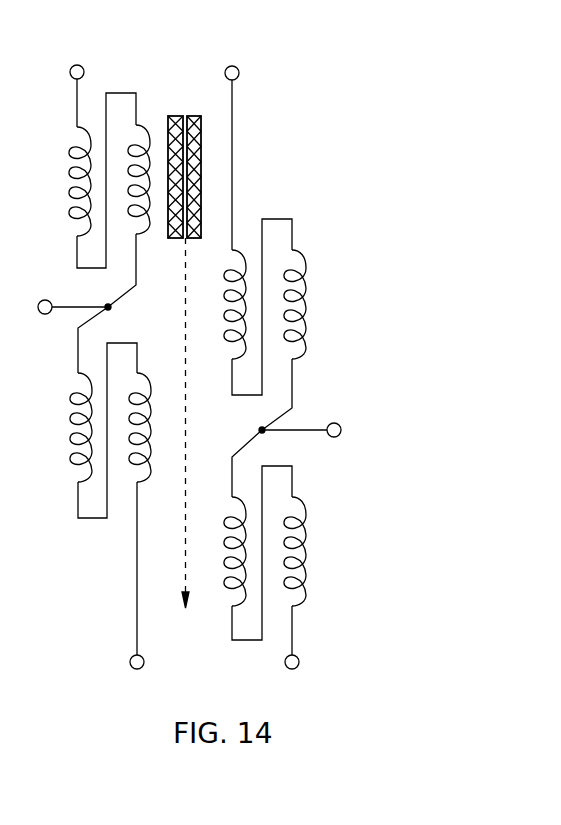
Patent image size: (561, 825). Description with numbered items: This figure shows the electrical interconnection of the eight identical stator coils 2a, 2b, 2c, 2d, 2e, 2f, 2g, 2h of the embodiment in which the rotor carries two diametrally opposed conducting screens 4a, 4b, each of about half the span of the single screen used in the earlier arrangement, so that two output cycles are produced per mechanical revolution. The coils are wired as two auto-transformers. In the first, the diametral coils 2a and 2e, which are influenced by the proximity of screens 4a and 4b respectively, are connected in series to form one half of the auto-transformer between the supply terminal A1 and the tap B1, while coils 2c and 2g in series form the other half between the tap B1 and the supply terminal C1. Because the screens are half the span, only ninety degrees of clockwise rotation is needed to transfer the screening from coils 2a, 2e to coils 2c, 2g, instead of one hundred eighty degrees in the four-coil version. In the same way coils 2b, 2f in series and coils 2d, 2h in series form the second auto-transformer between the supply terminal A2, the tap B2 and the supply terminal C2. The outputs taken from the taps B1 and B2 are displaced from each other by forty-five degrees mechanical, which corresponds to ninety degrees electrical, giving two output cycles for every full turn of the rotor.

The coil 2a is at (68, 181).
The coil 2b is at (220, 304).
The coil 2c is at (66, 427).
The coil 2d is at (220, 551).
The coil 2e is at (131, 180).
The coil 2f is at (310, 304).
The coil 2g is at (155, 429).
The coil 2h is at (313, 551).
The conducting screen 4a is at (172, 104).
The conducting screen 4b is at (196, 104).
The supply terminal A1 is at (77, 81).
The supply terminal A2 is at (233, 143).
The tap B1 is at (59, 307).
The tap B2 is at (318, 432).
The supply terminal C1 is at (137, 593).
The supply terminal C2 is at (297, 654).